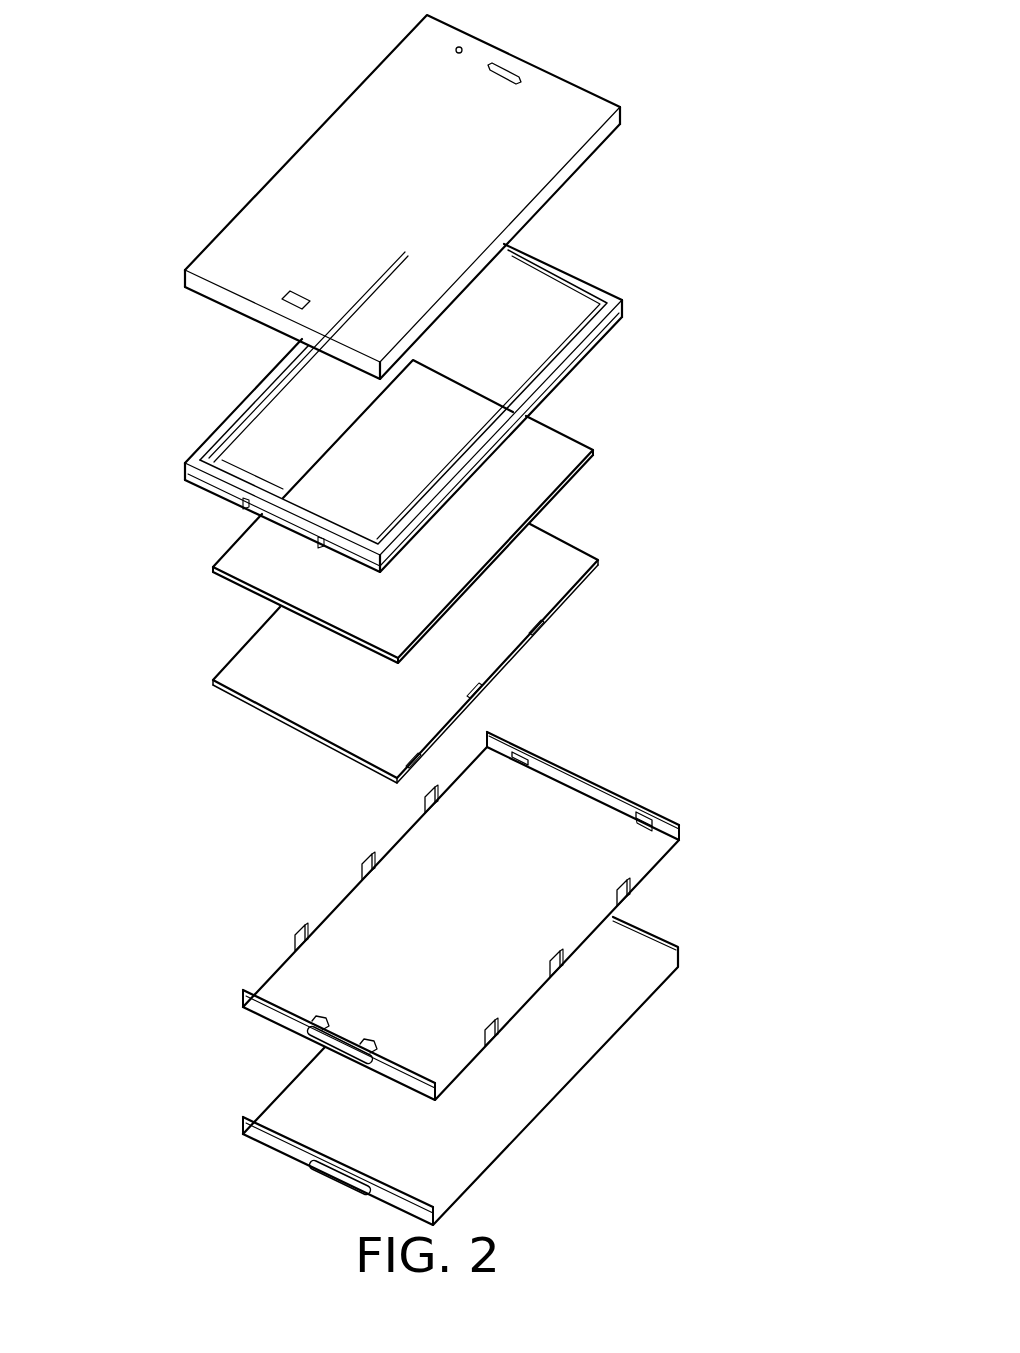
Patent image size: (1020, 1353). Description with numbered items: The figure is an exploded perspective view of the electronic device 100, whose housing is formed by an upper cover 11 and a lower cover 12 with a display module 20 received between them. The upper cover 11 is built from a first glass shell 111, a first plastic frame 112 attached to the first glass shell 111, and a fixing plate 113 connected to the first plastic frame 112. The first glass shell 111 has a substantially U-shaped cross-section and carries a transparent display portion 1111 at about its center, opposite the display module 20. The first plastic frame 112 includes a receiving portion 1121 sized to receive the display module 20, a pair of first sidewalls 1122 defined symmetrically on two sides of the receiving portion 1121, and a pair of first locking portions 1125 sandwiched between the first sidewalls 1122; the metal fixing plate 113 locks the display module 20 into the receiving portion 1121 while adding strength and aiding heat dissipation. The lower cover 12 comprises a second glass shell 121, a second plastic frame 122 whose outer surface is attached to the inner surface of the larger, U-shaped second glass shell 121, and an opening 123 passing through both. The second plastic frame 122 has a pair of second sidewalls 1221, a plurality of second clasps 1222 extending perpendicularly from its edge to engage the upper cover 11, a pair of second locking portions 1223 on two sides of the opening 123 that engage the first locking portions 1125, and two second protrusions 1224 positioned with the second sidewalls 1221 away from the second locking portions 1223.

The electronic device 100 is at (201, 61).
The upper cover 11 is at (712, 190).
The first glass shell 111 is at (577, 170).
The transparent display portion 1111 is at (272, 215).
The first plastic frame 112 is at (608, 285).
The receiving portion 1121 is at (290, 422).
The first sidewalls 1122 is at (182, 477).
The first locking portions 1125 is at (242, 505).
The display module 20 is at (245, 564).
The fixing plate 113 is at (568, 555).
The lower cover 12 is at (752, 870).
The second plastic frame 122 is at (660, 866).
The second sidewalls 1221 is at (540, 752).
The second protrusions 1224 is at (640, 815).
The second clasps 1222 is at (300, 932).
The second locking portions 1223 is at (318, 1022).
The opening 123 is at (316, 1042).
The second glass shell 121 is at (645, 945).